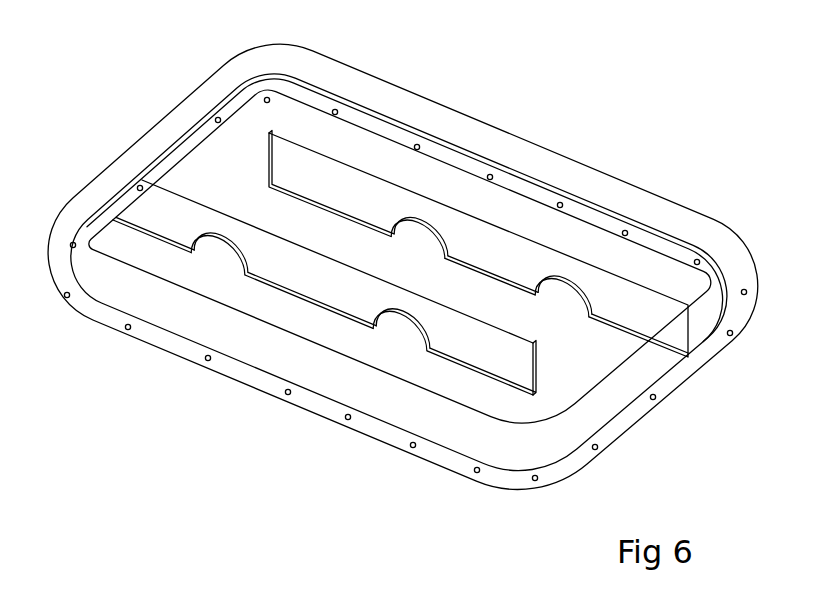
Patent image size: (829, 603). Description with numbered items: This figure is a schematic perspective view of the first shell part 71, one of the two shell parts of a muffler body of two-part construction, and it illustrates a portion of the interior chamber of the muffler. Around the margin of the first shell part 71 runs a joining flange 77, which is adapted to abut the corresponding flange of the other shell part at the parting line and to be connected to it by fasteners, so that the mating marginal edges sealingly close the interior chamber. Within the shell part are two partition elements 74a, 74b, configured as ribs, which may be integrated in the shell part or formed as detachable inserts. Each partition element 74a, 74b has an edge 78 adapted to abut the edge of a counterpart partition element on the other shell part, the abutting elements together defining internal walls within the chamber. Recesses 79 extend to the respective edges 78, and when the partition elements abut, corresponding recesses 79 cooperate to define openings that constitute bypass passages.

The first shell part 71 is at (119, 113).
The partition element 74a is at (478, 350).
The partition element 74b is at (656, 315).
The joining flange 77 is at (627, 422).
The edge 78 is at (355, 212).
The recess 79 is at (428, 218).